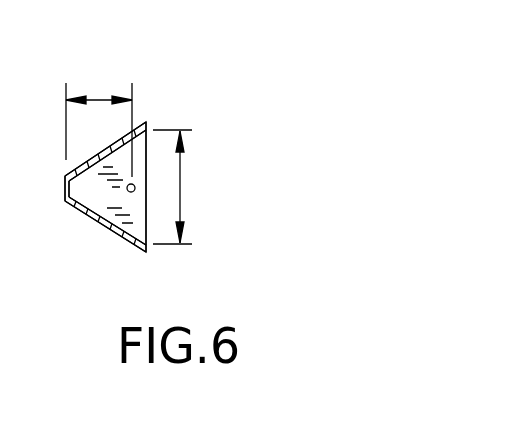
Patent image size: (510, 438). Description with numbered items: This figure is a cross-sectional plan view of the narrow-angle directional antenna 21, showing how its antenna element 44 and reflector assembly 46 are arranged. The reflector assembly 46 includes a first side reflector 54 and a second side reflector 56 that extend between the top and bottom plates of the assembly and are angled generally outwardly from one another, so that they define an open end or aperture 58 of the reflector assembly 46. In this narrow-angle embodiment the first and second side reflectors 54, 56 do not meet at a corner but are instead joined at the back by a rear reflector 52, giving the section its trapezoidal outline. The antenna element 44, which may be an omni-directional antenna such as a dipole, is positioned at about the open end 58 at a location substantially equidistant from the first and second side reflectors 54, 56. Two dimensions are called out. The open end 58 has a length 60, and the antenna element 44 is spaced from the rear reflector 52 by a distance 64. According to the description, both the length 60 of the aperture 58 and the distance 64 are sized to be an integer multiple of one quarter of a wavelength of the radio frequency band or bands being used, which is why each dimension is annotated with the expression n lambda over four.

The narrow-angle antenna 21 is at (240, 80).
The antenna element 44 is at (134, 190).
The reflector assembly 46 is at (62, 218).
The rear reflector 52 is at (65, 187).
The first side reflector 54 is at (85, 157).
The second side reflector 56 is at (115, 235).
The open end or aperture 58 is at (146, 168).
The length of the open end 60 is at (180, 187).
The distance between antenna element and rear reflector 64 is at (98, 98).